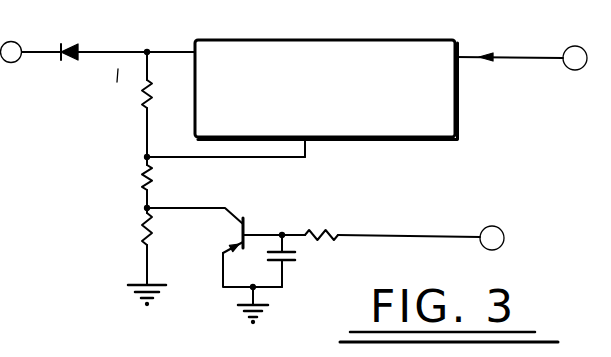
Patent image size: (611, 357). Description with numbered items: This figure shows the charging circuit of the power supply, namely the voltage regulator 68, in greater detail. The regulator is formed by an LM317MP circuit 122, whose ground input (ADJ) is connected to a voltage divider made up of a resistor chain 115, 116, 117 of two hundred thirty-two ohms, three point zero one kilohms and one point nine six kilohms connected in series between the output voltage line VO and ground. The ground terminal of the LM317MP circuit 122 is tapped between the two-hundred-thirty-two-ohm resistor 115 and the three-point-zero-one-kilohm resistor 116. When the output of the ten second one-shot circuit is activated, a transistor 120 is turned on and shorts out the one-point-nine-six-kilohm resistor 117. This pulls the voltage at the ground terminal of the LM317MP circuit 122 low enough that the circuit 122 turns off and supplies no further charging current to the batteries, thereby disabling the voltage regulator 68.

The voltage regulator 68 is at (297, 182).
The 232Ω resistor 115 is at (144, 101).
The 3.01KΩ resistor 116 is at (155, 178).
The 1.96KΩ resistor 117 is at (150, 240).
The transistor 120 is at (250, 222).
The LM317MP circuit 122 is at (398, 140).